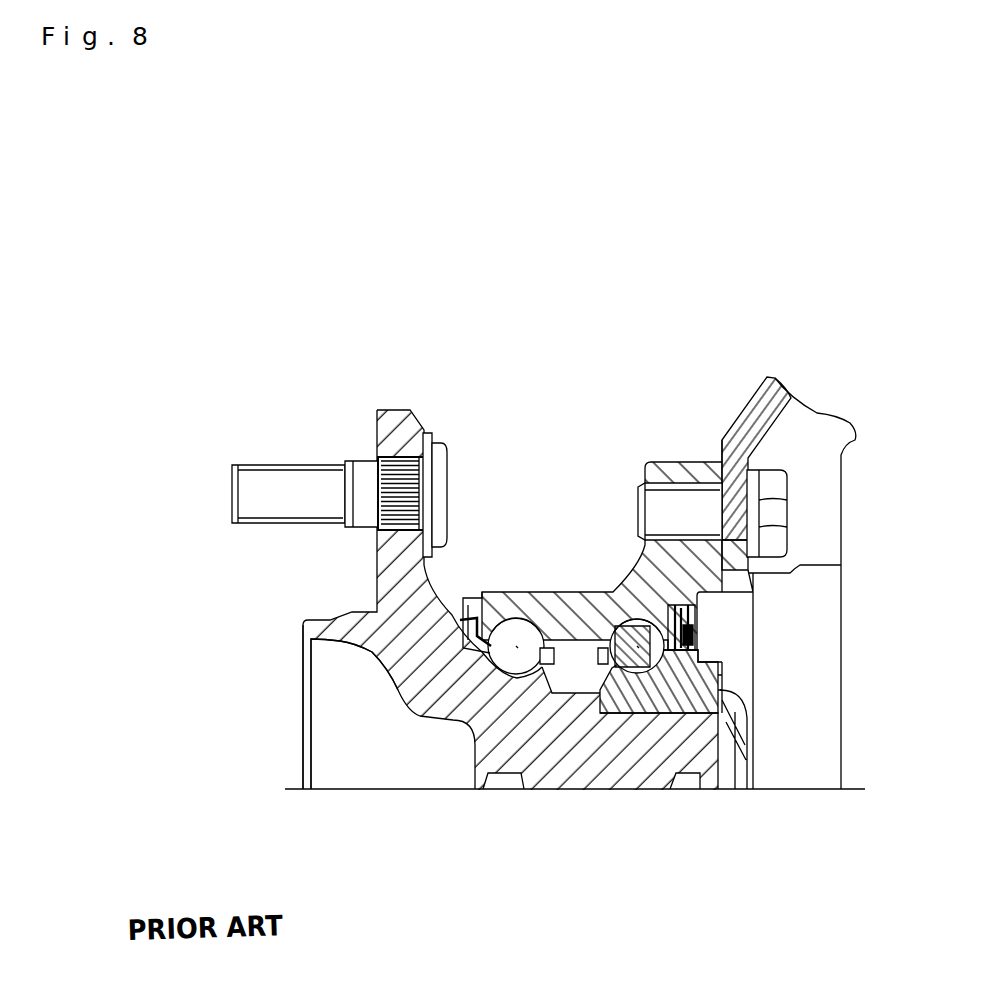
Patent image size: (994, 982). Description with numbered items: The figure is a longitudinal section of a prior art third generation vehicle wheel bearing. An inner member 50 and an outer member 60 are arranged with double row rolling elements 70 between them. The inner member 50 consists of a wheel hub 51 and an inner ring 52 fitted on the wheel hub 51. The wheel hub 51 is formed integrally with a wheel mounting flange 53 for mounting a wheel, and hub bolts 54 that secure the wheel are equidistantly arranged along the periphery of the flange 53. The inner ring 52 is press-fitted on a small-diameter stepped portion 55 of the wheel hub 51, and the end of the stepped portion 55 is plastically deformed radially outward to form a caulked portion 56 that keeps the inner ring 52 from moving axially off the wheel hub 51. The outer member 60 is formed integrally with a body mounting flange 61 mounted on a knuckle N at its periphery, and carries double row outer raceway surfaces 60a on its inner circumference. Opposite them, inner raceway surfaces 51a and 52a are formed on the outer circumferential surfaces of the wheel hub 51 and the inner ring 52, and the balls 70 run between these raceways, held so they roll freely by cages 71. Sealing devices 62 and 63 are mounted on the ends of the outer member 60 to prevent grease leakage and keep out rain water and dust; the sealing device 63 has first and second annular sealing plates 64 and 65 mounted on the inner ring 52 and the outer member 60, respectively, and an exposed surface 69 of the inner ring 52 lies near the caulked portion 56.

The inner member 50 is at (407, 720).
The wheel hub 51 is at (383, 672).
The inner raceway surface 51a is at (490, 666).
The inner ring 52 is at (722, 684).
The inner raceway surface 52a is at (720, 673).
The wheel mounting flange 53 is at (393, 410).
The hub bolt 54 is at (263, 476).
The stepped portion 55 is at (672, 712).
The caulked portion 56 is at (740, 713).
The outer member 60 is at (541, 622).
The outer raceway surface 60a is at (510, 618).
The body mounting flange 61 is at (688, 468).
The sealing device 62 is at (462, 630).
The sealing device 63 is at (712, 611).
The first annular sealing plate 64 is at (712, 637).
The second annular sealing plate 65 is at (648, 616).
The exposed surface 69 is at (705, 652).
The rolling element 70 is at (637, 668).
The cage 71 is at (582, 640).
The knuckle N is at (765, 392).